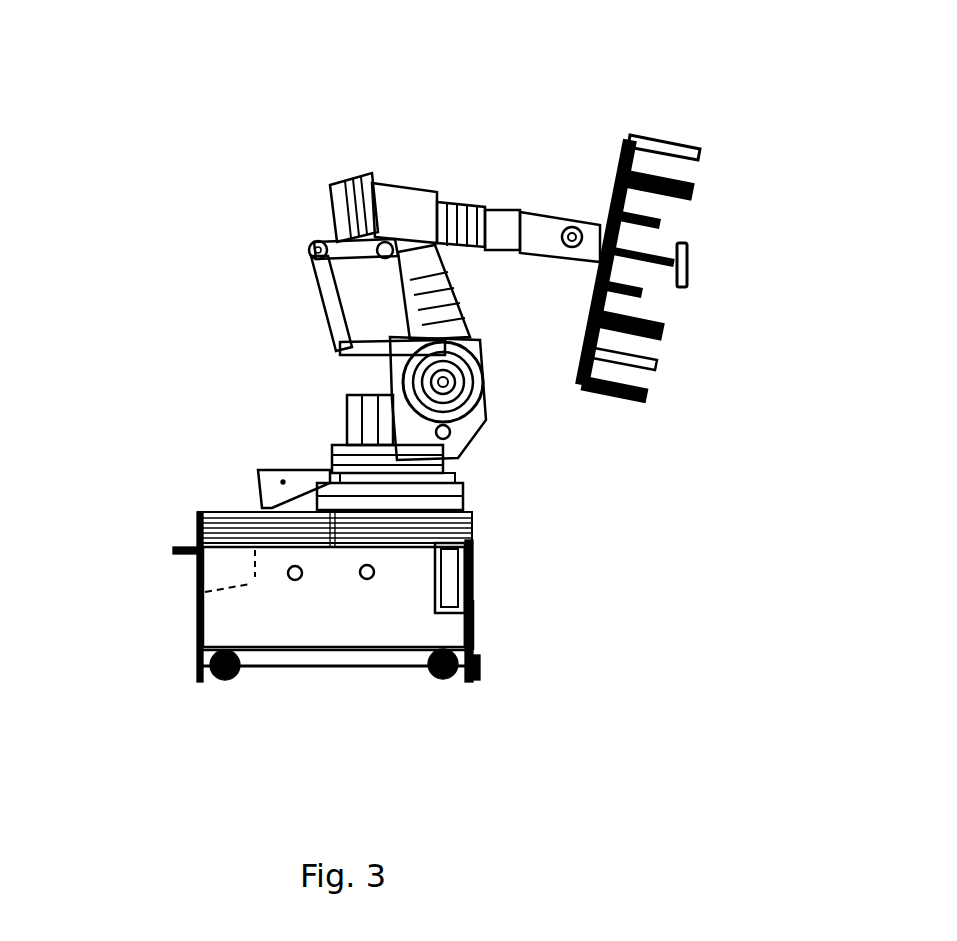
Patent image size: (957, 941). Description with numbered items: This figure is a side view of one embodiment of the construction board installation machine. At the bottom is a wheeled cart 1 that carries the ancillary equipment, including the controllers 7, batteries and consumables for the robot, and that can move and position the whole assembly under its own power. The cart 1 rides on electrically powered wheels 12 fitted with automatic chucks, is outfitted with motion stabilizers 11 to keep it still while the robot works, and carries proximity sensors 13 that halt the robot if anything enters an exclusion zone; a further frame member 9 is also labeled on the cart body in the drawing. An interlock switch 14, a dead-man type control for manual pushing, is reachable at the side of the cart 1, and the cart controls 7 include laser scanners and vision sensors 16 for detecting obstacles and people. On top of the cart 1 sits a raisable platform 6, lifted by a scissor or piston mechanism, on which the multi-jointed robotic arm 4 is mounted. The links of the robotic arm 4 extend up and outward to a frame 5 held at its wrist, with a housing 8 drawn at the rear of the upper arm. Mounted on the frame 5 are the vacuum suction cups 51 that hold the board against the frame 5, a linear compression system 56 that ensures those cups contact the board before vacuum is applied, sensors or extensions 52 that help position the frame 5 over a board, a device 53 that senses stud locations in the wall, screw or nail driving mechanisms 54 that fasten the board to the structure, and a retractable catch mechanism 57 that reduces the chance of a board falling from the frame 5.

The cart 1 is at (270, 610).
The robotic arm 4 is at (430, 197).
The frame 5 is at (610, 163).
The raisable platform 6 is at (473, 512).
The controllers 7 is at (218, 572).
The counterweight housing 8 is at (332, 195).
The vertical frame member 9 is at (445, 583).
The motion stabilizers 11 is at (473, 640).
The wheels 12 is at (458, 677).
The proximity sensors 13 is at (470, 545).
The interlock switch 14 is at (187, 553).
The laser scanners and vision sensors 16 is at (367, 580).
The vacuum suction cups 51 is at (693, 192).
The sensors or extensions 52 is at (692, 150).
The stud sensing device 53 is at (688, 250).
The screw/nail-driving mechanism 54 is at (640, 293).
The linear compression system 56 is at (637, 320).
The retractable catch mechanism 57 is at (643, 392).